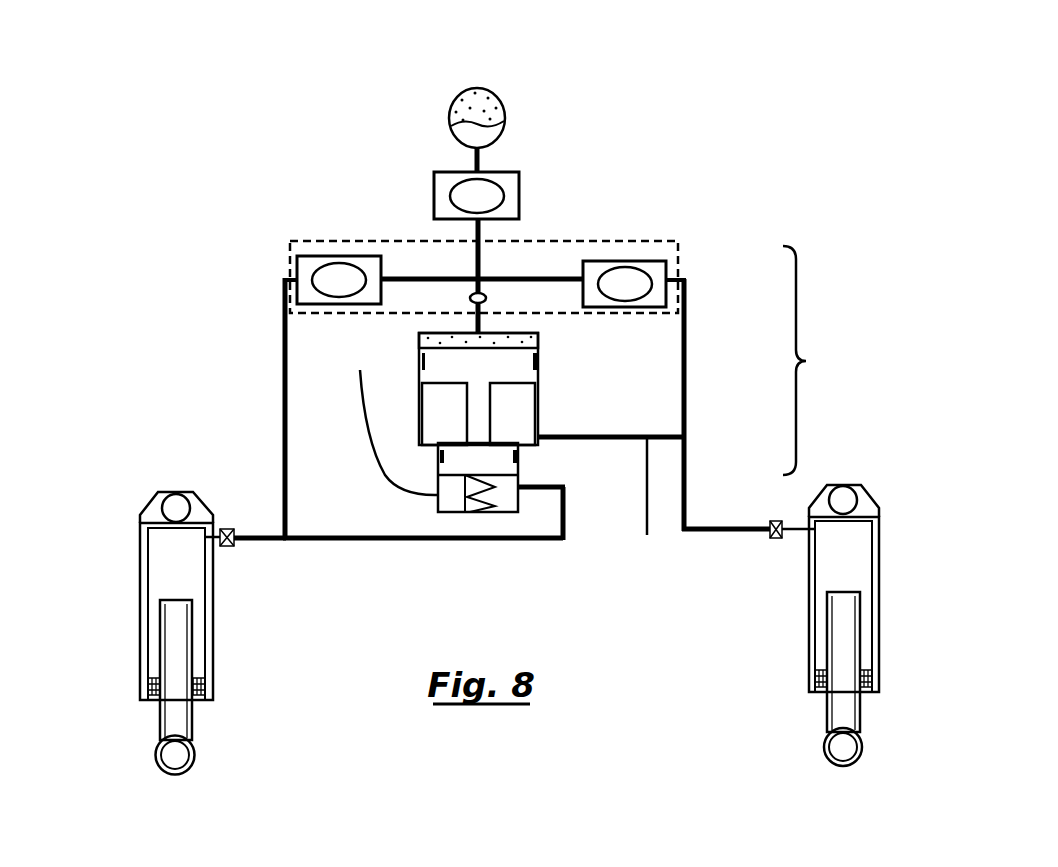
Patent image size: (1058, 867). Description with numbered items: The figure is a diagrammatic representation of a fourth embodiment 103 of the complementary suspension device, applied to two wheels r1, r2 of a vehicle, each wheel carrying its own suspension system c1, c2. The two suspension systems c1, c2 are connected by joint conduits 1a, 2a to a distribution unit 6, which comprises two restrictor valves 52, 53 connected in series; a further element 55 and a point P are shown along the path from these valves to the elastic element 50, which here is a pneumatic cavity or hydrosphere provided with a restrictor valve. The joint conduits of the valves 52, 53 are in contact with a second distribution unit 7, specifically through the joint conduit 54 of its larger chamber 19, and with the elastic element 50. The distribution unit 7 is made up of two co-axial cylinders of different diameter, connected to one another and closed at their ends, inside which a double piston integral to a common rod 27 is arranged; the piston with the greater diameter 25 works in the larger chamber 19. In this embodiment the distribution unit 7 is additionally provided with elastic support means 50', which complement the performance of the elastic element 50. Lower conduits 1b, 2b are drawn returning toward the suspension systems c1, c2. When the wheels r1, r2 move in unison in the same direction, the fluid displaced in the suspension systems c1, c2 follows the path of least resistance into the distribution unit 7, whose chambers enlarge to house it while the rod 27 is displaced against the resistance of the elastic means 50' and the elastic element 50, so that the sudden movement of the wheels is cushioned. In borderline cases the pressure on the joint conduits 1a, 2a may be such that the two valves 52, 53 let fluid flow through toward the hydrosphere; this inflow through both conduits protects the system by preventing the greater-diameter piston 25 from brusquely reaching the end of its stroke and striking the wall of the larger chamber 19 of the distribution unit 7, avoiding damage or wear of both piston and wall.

The distribution unit 6 is at (270, 267).
The distribution unit 7 is at (446, 440).
The elastic element 50 is at (343, 114).
The elastic support means 50' is at (406, 414).
The restrictor valve 52 is at (332, 257).
The restrictor valve 53 is at (627, 261).
The joint conduit 54 is at (483, 253).
The valve 55 is at (520, 172).
The pressure point P is at (471, 294).
The larger chamber 19 is at (537, 341).
The piston with the greater diameter 25 is at (517, 363).
The rod 27 is at (478, 408).
The joint conduit 1a is at (283, 373).
The first line lower part 1b is at (327, 541).
The joint conduit 2a is at (686, 369).
The second line lower part 2b is at (612, 507).
The fourth embodiment 103 is at (833, 360).
The suspension system c1 is at (131, 658).
The suspension system c2 is at (885, 655).
The vehicle wheel r1 is at (173, 781).
The vehicle wheel r2 is at (845, 776).